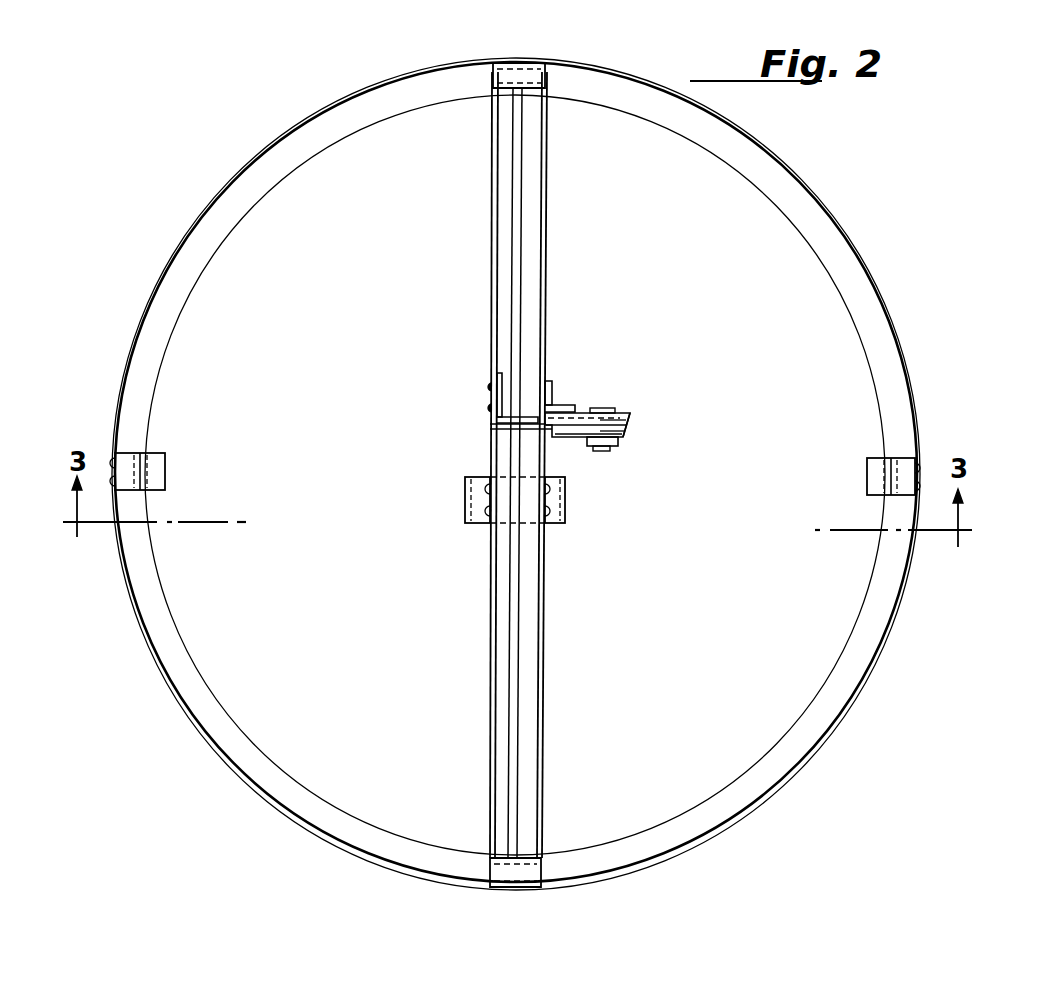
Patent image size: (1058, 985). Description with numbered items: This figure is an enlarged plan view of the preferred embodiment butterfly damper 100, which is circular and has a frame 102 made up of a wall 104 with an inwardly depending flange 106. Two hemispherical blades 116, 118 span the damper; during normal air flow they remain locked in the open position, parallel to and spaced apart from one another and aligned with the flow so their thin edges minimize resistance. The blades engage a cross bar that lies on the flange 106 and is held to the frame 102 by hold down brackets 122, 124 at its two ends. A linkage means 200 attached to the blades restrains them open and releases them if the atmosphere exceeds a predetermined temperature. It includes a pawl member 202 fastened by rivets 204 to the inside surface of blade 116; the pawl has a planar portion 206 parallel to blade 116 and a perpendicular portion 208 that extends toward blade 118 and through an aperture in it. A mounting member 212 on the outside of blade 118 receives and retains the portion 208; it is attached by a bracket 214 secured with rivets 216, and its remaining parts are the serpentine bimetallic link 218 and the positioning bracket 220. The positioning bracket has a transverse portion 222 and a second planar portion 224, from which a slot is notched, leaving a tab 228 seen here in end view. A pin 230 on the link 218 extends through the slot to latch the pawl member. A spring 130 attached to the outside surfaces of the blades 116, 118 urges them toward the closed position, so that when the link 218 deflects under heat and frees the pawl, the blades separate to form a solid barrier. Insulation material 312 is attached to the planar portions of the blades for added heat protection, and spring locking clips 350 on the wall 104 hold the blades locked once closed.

The butterfly damper 100 is at (900, 195).
The frame 102 is at (787, 156).
The wall 104 is at (237, 173).
The inwardly depending flange 106 is at (817, 228).
The blade 116 is at (495, 174).
The blade 118 is at (545, 174).
The hold down bracket 122 is at (523, 77).
The hold down bracket 124 is at (518, 875).
The spring 130 is at (565, 522).
The linkage means 200 is at (571, 413).
The pawl member 202 is at (498, 427).
The rivets 204 is at (489, 408).
The planar portion of pawl member 206 is at (500, 378).
The perpendicular portion of pawl member 208 is at (530, 425).
The mounting member 212 is at (648, 404).
The bracket 214 is at (580, 410).
The rivets 216 is at (553, 385).
The serpentine bimetallic link 218 is at (615, 448).
The positioning bracket 220 is at (601, 411).
The transverse portion 222 is at (632, 415).
The second planar portion 224 is at (622, 437).
The tab 228 is at (603, 409).
The pin 230 is at (622, 433).
The insulation material 312 is at (503, 607).
The spring locking clips 350 is at (168, 436).